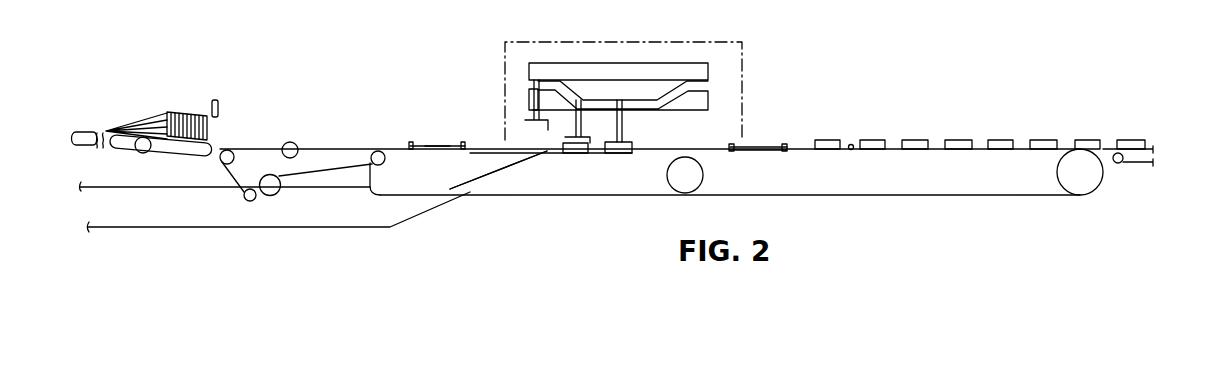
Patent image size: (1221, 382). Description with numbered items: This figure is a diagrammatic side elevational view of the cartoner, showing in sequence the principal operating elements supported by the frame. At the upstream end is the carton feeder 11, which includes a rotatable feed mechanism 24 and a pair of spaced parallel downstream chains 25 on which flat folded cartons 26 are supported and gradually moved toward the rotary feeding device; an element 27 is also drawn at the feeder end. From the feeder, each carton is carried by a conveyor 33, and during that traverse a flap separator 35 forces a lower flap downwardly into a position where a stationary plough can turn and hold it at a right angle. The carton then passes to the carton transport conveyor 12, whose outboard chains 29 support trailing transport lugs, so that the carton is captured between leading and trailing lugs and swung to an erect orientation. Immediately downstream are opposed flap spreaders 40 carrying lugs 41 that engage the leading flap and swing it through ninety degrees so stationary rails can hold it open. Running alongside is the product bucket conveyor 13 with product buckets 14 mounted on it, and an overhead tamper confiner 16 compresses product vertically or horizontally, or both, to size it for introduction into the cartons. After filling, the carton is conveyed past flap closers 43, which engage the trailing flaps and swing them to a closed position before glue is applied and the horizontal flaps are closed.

The carton feeder 11 is at (136, 154).
The carton transport conveyor 12 is at (476, 147).
The product bucket conveyor 13 is at (193, 180).
The product buckets 14 is at (487, 172).
The overhead tamper confiner 16 is at (642, 131).
The rotatable feed mechanism 24 is at (221, 100).
The downstream chains 25 is at (165, 146).
The flat folded cartons 26 is at (170, 110).
The web strip 27 is at (103, 132).
The outboard chains 29 is at (853, 150).
The conveyor 33 is at (265, 149).
The flap separator 35 is at (293, 146).
The flap spreaders 40 is at (430, 146).
The lugs 41 is at (412, 144).
The flap closers 43 is at (757, 158).